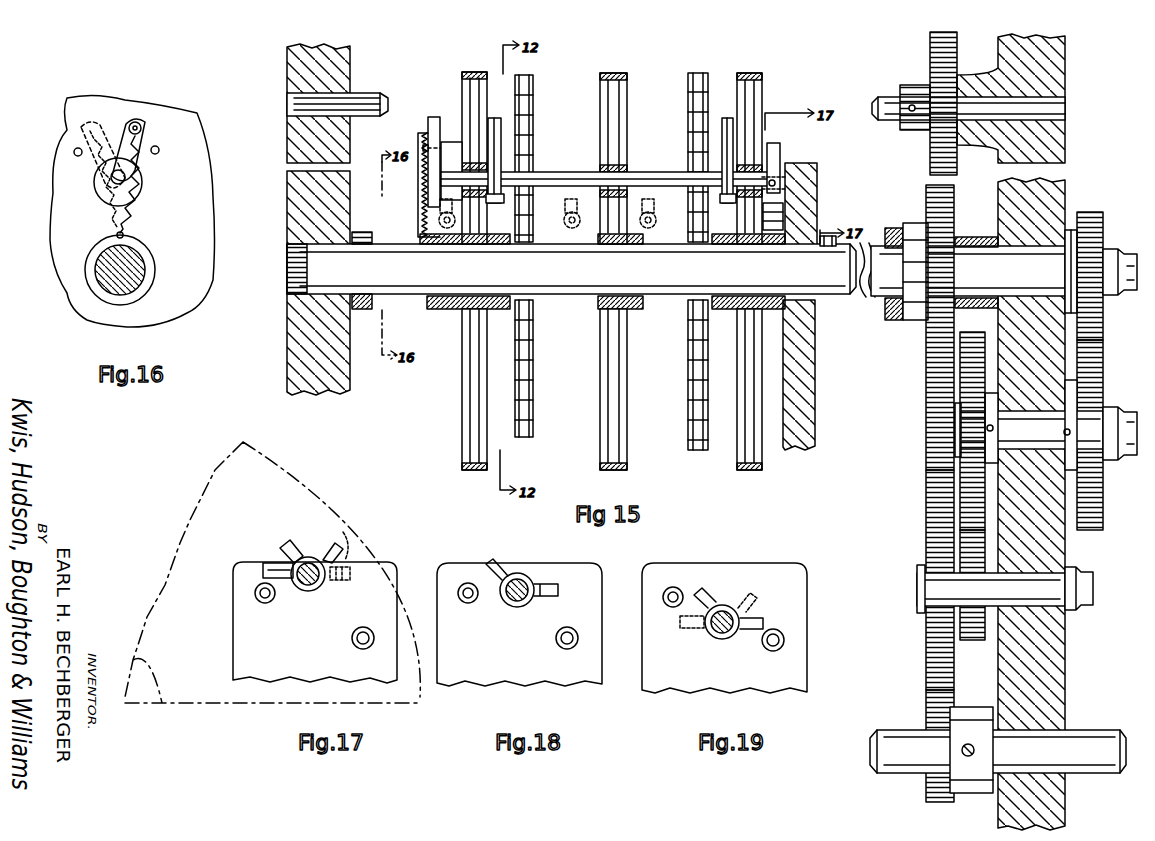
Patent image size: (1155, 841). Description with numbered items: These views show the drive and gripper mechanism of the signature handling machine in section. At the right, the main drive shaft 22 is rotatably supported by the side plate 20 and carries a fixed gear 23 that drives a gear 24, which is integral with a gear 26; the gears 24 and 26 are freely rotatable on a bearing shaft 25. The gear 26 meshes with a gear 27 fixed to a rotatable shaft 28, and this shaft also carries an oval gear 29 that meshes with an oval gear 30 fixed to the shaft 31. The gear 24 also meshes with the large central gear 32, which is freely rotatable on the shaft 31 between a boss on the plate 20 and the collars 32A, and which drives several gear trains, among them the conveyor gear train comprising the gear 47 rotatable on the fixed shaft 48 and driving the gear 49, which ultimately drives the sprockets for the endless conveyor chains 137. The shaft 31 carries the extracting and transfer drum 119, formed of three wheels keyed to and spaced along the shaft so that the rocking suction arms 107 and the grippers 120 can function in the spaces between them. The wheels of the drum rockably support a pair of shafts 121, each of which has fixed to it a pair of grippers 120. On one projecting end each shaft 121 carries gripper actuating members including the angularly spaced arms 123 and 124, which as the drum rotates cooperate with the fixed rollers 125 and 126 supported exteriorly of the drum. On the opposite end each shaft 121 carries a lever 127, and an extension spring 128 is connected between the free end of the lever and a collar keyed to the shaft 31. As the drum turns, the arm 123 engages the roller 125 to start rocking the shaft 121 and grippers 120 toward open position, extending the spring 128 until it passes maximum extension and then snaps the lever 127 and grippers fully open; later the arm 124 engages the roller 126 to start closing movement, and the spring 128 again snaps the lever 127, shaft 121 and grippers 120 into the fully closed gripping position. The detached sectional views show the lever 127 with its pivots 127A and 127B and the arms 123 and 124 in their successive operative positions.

In FIG. 15, the side plate 20 is at (287, 360).
In FIG. 15, the shaft 31 is at (572, 296).
In FIG. 16, the shaft 31 is at (135, 268).
In FIG. 15, the extracting and transfer drum 119 is at (470, 72).
In FIG. 15, the endless conveyor chain 137 is at (520, 118).
In FIG. 15, the lever 127 is at (432, 117).
In FIG. 16, the lever 127 is at (100, 160).
In FIG. 15, the extension spring 128 is at (422, 144).
In FIG. 16, the extension spring 128 is at (127, 223).
In FIG. 15, the shaft 121 is at (570, 163).
In FIG. 16, the shaft 121 is at (115, 178).
In FIG. 17, the shaft 121 is at (305, 592).
In FIG. 18, the shaft 121 is at (513, 600).
In FIG. 19, the shaft 121 is at (718, 636).
In FIG. 15, the gripper 120 is at (492, 118).
In FIG. 15, the arm 124 is at (774, 143).
In FIG. 17, the arm 124 is at (340, 540).
In FIG. 18, the arm 124 is at (552, 584).
In FIG. 19, the arm 124 is at (757, 615).
In FIG. 15, the roller 126 is at (783, 208).
In FIG. 17, the roller 126 is at (363, 627).
In FIG. 19, the roller 126 is at (771, 651).
In FIG. 15, the rocking suction arm 107 is at (440, 216).
In FIG. 15, the fixed shaft 48 is at (1055, 103).
In FIG. 15, the gear 47 is at (925, 88).
In FIG. 15, the gear 49 is at (957, 56).
In FIG. 15, the collar 32A is at (888, 317).
In FIG. 15, the large central gear 32 is at (926, 376).
In FIG. 15, the gear 24 is at (926, 510).
In FIG. 15, the gear 23 is at (926, 716).
In FIG. 15, the oval gear 30 is at (1088, 212).
In FIG. 15, the oval gear 29 is at (1090, 382).
In FIG. 15, the rotatable shaft 28 is at (1044, 424).
In FIG. 15, the gear 27 is at (970, 334).
In FIG. 15, the gear 26 is at (970, 640).
In FIG. 15, the bearing shaft 25 is at (1040, 565).
In FIG. 15, the main drive shaft 22 is at (1072, 740).
In FIG. 16, the pin 127B is at (78, 152).
In FIG. 16, the pin 127A is at (155, 150).
In FIG. 17, the arm 123 is at (270, 565).
In FIG. 19, the arm 123 is at (703, 590).
In FIG. 17, the roller 125 is at (255, 593).
In FIG. 19, the roller 125 is at (673, 587).